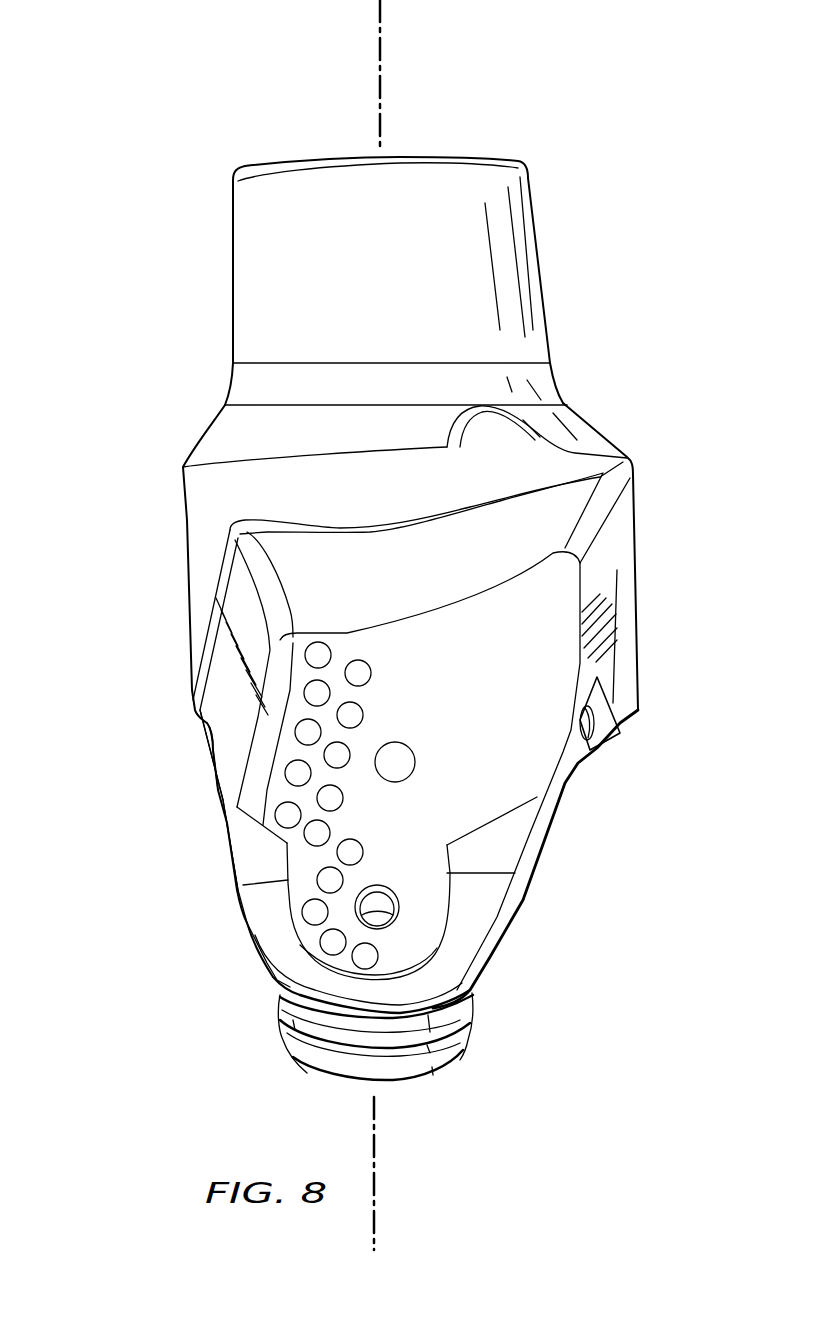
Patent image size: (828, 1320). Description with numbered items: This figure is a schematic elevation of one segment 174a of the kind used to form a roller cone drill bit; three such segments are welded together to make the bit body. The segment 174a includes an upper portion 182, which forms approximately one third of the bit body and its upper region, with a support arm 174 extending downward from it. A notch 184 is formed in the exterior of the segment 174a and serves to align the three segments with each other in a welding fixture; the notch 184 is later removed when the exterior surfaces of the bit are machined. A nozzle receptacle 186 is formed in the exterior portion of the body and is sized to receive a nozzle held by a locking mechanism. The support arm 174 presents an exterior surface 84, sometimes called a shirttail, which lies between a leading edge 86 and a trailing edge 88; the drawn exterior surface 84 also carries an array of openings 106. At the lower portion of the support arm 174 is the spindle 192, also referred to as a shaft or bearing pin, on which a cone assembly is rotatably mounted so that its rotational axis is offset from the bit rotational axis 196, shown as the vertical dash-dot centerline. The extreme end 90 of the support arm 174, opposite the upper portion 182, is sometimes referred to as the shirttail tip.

The bit rotational axis 196 is at (378, 68).
The upper portion 182 is at (233, 275).
The segment 174a is at (578, 279).
The support arm 174 is at (151, 524).
The notch 184 is at (462, 428).
The exterior surface 84 is at (530, 663).
The holes 106 is at (346, 801).
The leading edge 86 is at (217, 799).
The trailing edge 88 is at (527, 900).
The nozzle receptacle 186 is at (618, 742).
The extreme end 90 is at (360, 1020).
The spindle 192 is at (470, 1020).